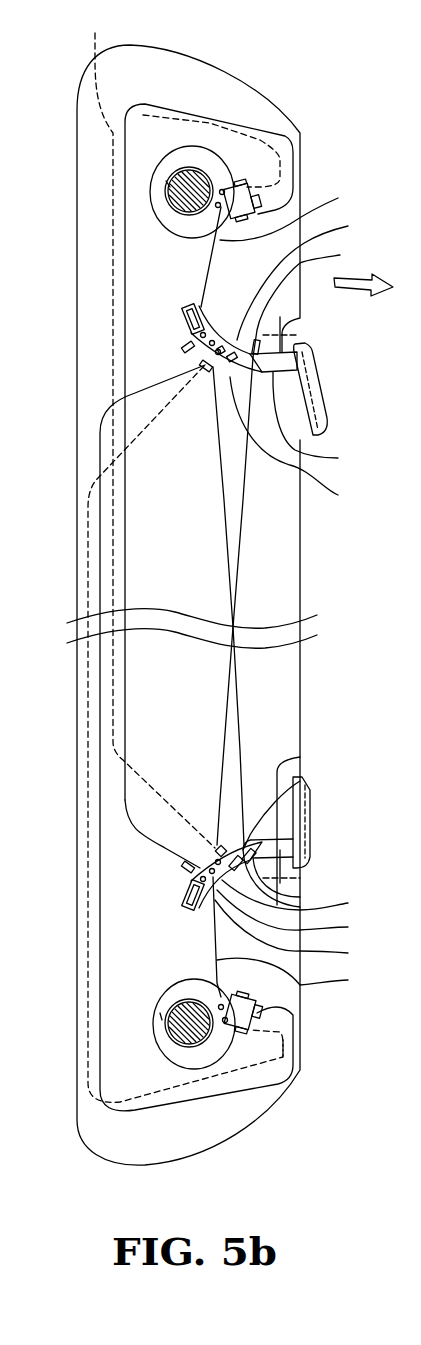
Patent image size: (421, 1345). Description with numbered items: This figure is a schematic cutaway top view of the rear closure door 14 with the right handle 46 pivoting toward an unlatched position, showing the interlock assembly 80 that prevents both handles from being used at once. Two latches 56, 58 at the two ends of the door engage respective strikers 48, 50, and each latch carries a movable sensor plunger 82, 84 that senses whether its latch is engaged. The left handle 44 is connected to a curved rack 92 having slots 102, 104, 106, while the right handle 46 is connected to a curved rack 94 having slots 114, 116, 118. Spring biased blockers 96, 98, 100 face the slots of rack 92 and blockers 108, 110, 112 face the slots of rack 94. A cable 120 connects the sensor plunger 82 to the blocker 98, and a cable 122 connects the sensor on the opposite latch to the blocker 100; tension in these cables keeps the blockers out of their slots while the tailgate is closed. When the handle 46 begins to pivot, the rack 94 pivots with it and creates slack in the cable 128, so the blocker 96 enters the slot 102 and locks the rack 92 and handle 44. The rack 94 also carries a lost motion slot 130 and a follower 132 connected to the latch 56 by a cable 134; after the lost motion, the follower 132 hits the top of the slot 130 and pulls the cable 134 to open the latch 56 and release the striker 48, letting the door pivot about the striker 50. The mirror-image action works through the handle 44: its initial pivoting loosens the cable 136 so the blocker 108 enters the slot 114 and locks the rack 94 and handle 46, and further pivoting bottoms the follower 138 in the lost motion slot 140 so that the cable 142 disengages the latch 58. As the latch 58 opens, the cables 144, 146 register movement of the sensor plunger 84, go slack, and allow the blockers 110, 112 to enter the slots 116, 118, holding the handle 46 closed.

The door 14 is at (302, 547).
The left handle 44 is at (312, 818).
The right handle 46 is at (309, 427).
The striker 48 is at (168, 184).
The striker 50 is at (162, 1015).
The latch 56 is at (190, 147).
The latch 58 is at (190, 1060).
The interlock assembly 80 is at (293, 100).
The sensor plunger 82 is at (258, 214).
The sensor plunger 84 is at (258, 1000).
The curved rack 92 is at (296, 915).
The curved rack 94 is at (305, 278).
The blocker 96 is at (300, 897).
The blocker 98 is at (195, 870).
The blocker 100 is at (200, 847).
The slot 102 is at (300, 781).
The slot 104 is at (299, 933).
The slot 106 is at (303, 897).
The blocker 108 is at (316, 301).
The blocker 110 is at (203, 367).
The blocker 112 is at (190, 352).
The slot 114 is at (323, 421).
The slot 116 is at (302, 442).
The slot 118 is at (210, 368).
The cable 120 is at (175, 103).
The cable 122 is at (181, 429).
The cable 128 is at (223, 520).
The lost motion slot 130 is at (182, 310).
The follower 132 is at (183, 341).
The cable 134 is at (299, 214).
The cable 136 is at (228, 697).
The follower 138 is at (197, 898).
The lost motion slot 140 is at (197, 920).
The cable 142 is at (300, 975).
The cable 144 is at (263, 1083).
The cable 146 is at (230, 1093).